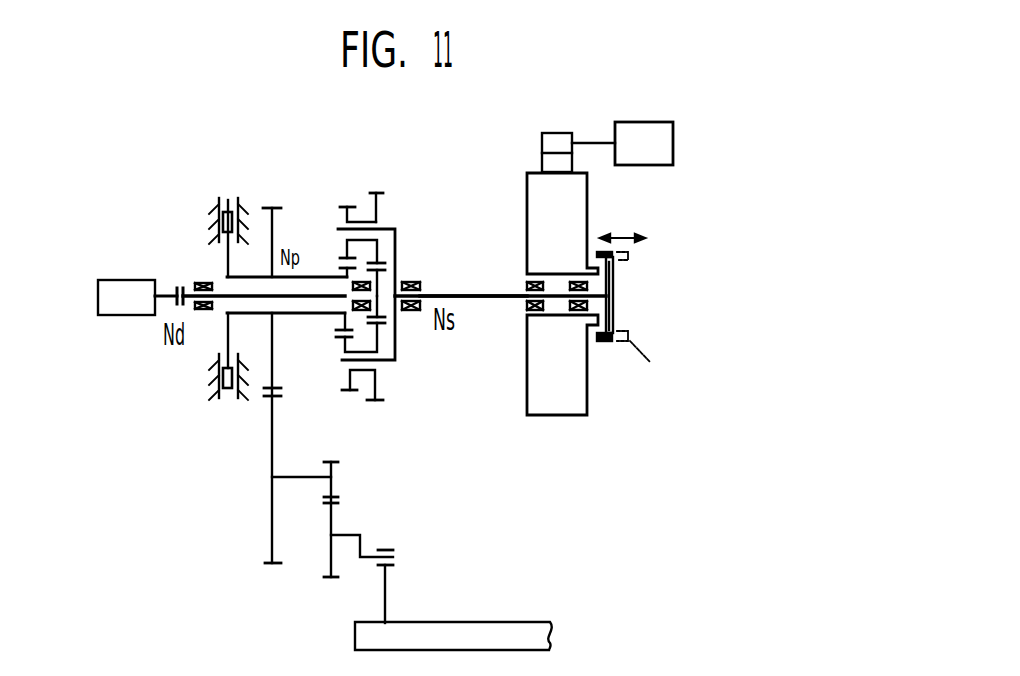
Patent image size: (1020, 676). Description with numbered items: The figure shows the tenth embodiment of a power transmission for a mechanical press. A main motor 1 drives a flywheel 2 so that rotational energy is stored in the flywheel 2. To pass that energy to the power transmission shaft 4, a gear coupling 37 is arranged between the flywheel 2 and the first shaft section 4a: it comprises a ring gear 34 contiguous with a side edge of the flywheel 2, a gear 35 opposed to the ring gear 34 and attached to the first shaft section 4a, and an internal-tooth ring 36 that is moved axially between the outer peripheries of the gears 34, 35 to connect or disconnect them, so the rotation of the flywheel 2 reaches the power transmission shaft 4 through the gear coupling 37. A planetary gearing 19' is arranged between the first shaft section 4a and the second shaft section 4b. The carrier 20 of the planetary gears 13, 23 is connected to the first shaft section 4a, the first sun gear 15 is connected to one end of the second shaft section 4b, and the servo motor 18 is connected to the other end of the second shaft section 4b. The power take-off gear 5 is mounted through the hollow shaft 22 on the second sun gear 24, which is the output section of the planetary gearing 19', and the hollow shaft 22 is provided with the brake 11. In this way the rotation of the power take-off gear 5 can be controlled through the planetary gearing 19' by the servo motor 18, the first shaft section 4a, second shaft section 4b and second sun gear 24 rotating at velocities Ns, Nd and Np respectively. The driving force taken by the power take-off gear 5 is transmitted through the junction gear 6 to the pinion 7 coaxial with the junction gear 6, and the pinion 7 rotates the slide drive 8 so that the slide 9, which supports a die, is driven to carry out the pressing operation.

The main motor 1 is at (674, 143).
The flywheel 2 is at (574, 416).
The power transmission shaft 4 is at (496, 315).
The first shaft section 4a is at (476, 293).
The second shaft section 4b is at (222, 293).
The power take-off gear 5 is at (262, 214).
The junction gear 6 is at (272, 522).
The pinion 7 is at (340, 470).
The slide drive 8 is at (385, 528).
The slide 9 is at (495, 621).
The brake 11 is at (226, 208).
The planetary gear 13 is at (380, 200).
The first sun gear 15 is at (376, 305).
The servo motor 18 is at (125, 317).
The planetary gearing 19' is at (402, 412).
The carrier 20 is at (398, 243).
The hollow shaft 22 is at (307, 316).
The planetary gear 23 is at (350, 206).
The second sun gear 24 is at (345, 272).
The ring gear 34 is at (596, 250).
The gear 35 is at (615, 281).
The internal-tooth ring 36 is at (610, 343).
The gear coupling 37 is at (607, 352).